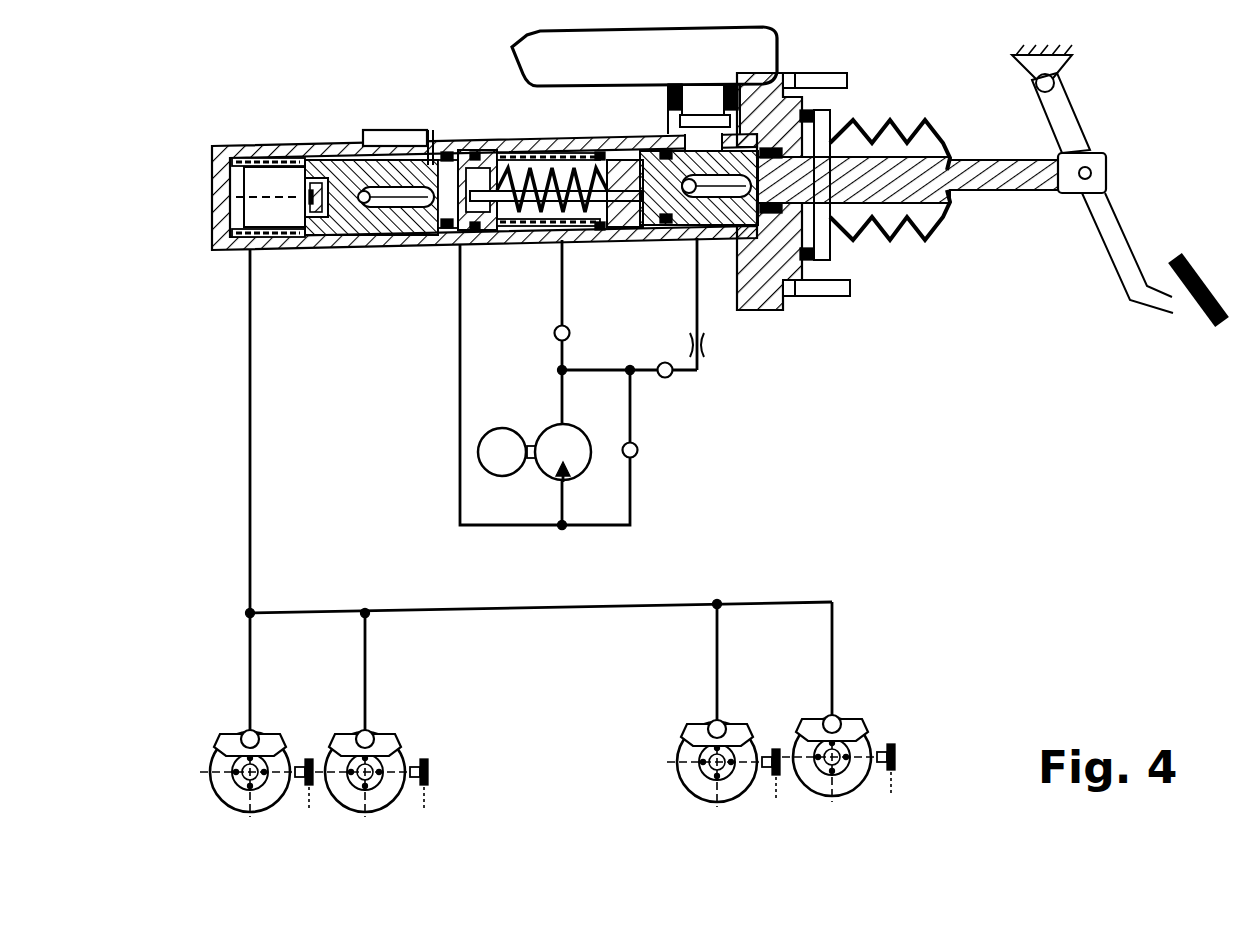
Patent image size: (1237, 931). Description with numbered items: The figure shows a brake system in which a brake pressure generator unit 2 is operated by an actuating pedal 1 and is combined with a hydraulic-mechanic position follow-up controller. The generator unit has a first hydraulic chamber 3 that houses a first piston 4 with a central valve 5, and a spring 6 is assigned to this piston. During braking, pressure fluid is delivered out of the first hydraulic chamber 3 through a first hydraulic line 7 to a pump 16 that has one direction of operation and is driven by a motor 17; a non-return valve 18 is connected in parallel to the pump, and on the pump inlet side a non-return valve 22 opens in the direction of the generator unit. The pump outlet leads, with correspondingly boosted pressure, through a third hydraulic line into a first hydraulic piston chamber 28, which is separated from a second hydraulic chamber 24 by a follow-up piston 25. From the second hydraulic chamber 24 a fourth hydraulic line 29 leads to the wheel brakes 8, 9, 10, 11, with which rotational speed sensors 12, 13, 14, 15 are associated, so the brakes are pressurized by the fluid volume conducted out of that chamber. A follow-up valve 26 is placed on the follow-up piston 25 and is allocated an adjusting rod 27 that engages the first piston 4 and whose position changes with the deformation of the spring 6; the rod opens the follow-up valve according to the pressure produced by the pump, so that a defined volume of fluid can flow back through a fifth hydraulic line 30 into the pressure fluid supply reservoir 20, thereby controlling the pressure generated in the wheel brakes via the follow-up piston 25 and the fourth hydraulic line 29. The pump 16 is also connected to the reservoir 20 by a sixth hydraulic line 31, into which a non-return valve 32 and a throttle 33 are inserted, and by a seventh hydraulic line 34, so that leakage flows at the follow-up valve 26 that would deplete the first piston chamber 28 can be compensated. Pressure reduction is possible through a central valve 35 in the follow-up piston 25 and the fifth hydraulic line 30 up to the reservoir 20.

The actuating pedal 1 is at (1120, 215).
The brake pressure generator unit 2 is at (285, 104).
The first hydraulic chamber 3 is at (559, 182).
The first piston 4 is at (679, 228).
The central valve 5 is at (612, 233).
The spring 6 is at (529, 215).
The first hydraulic line 7 is at (562, 295).
The wheel brake 8 is at (218, 800).
The wheel brake 9 is at (393, 798).
The wheel brake 10 is at (684, 790).
The wheel brake 11 is at (858, 780).
The rotational speed sensor 12 is at (310, 756).
The rotational speed sensor 13 is at (428, 770).
The rotational speed sensor 14 is at (776, 748).
The rotational speed sensor 15 is at (896, 758).
The pump 16 is at (546, 470).
The motor 17 is at (508, 428).
The non-return valve 18 is at (638, 450).
The pressure fluid supply reservoir 20 is at (778, 44).
The non-return valve 22 is at (572, 334).
The second hydraulic chamber 24 is at (264, 188).
The follow-up piston 25 is at (372, 220).
The follow-up valve 26 is at (432, 174).
The adjusting rod 27 is at (505, 186).
The first hydraulic piston chamber 28 is at (453, 234).
The fourth hydraulic line 29 is at (246, 372).
The fifth hydraulic line 30 is at (372, 134).
The sixth hydraulic line 31 is at (697, 297).
The non-return valve 32 is at (668, 378).
The throttle 33 is at (700, 346).
The seventh hydraulic line 34 is at (655, 150).
The central valve 35 is at (302, 212).